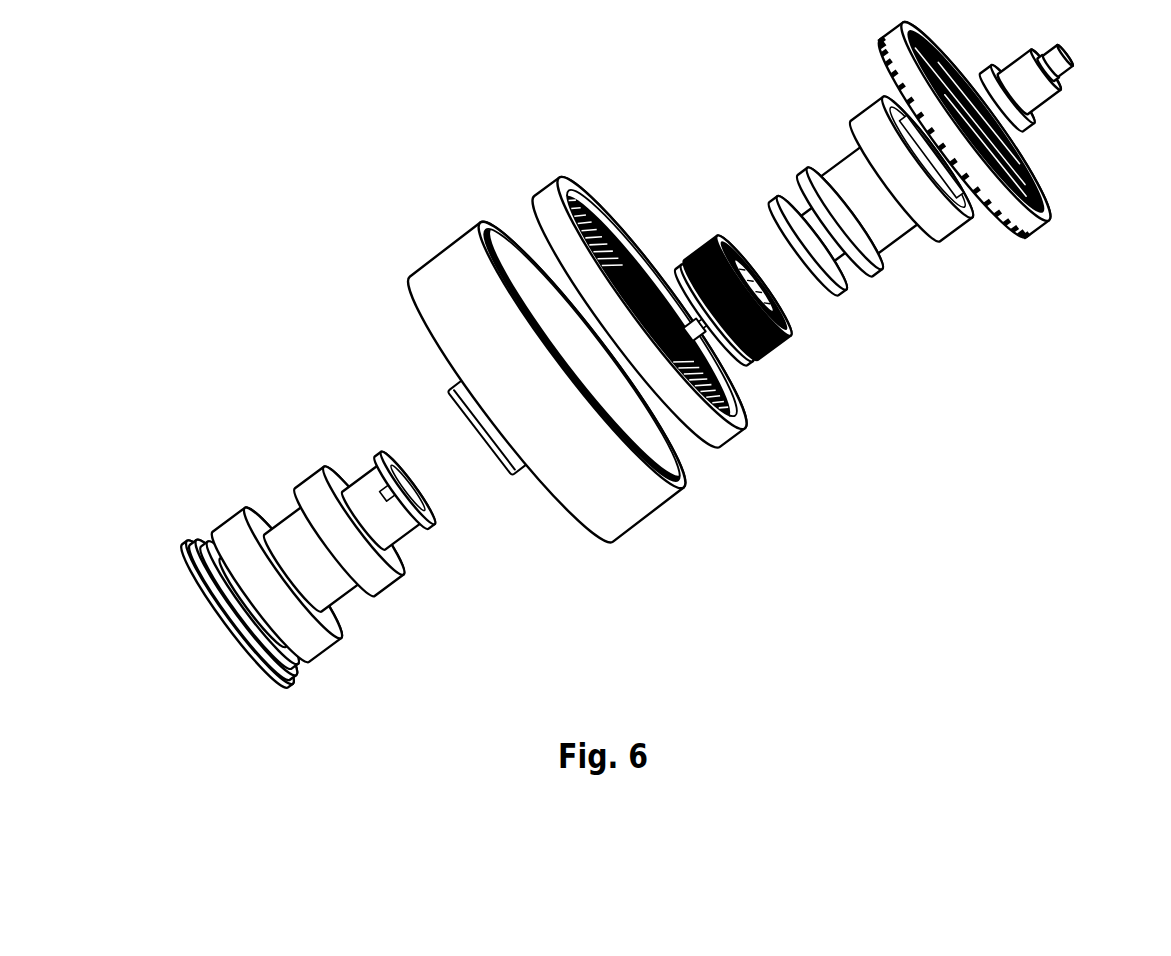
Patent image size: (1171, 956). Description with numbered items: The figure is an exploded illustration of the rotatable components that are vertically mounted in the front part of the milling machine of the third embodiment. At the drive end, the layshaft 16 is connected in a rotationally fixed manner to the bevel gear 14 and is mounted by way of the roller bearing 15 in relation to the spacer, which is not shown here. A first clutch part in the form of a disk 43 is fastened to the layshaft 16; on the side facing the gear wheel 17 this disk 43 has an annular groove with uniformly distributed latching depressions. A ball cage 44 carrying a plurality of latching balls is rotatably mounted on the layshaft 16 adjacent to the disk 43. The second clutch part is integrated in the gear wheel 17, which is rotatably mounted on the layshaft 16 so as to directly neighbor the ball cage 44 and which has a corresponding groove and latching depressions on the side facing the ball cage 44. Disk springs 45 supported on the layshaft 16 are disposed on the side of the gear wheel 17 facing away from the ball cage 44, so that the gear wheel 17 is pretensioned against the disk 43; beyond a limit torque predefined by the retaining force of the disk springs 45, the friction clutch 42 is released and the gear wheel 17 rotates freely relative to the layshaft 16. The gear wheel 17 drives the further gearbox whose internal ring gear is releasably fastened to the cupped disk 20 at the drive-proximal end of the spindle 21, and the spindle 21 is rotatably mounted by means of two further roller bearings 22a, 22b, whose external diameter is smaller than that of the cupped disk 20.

The bevel gear 14 is at (1047, 207).
The roller bearing 15 is at (722, 438).
The layshaft 16 is at (843, 173).
The gear wheel 17 is at (787, 347).
The cupped disk 20 is at (425, 258).
The spindle 21 is at (288, 517).
The roller bearing 22a is at (392, 590).
The roller bearing 22b is at (323, 655).
The friction clutch 42 is at (851, 334).
The disk 43 is at (800, 170).
The ball cage 44 is at (768, 203).
The disk springs 45 is at (735, 358).